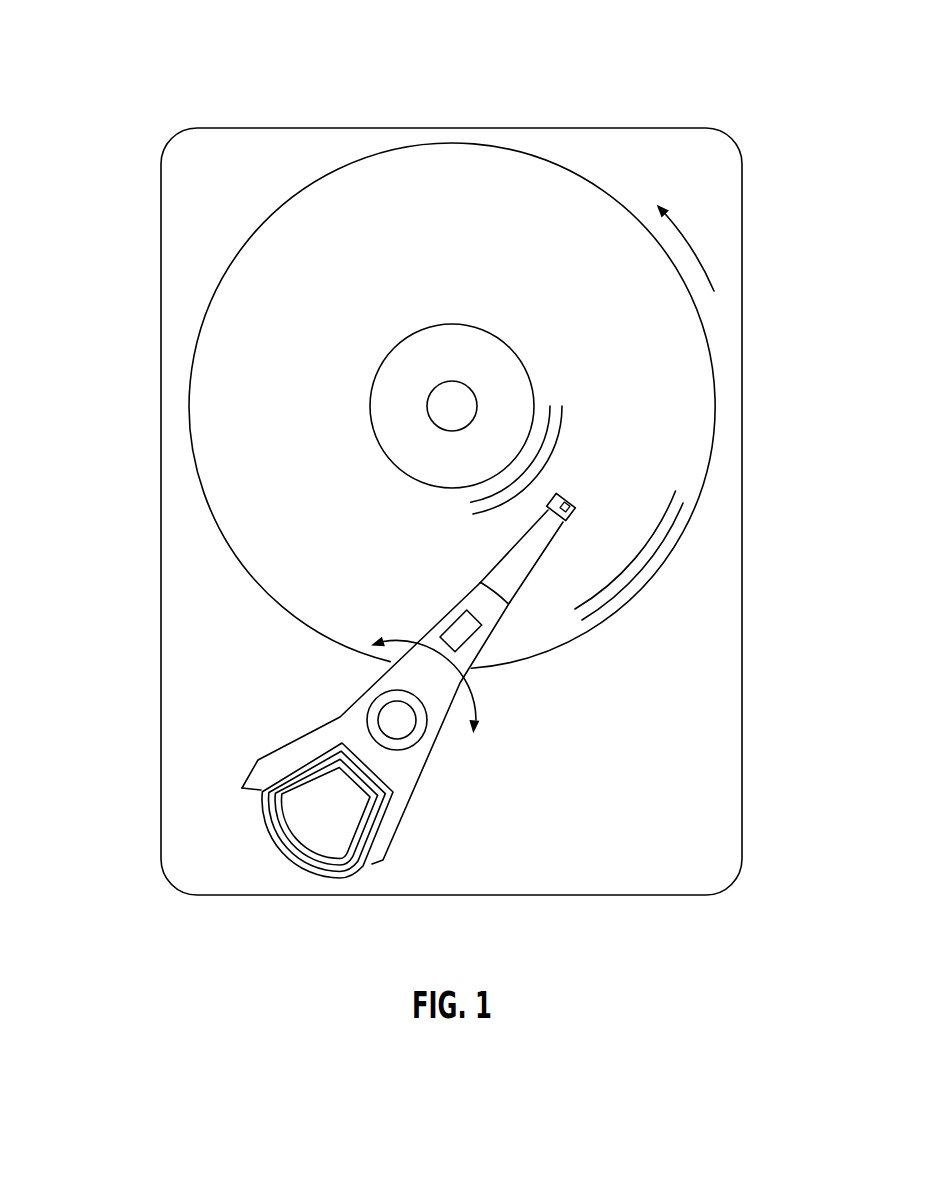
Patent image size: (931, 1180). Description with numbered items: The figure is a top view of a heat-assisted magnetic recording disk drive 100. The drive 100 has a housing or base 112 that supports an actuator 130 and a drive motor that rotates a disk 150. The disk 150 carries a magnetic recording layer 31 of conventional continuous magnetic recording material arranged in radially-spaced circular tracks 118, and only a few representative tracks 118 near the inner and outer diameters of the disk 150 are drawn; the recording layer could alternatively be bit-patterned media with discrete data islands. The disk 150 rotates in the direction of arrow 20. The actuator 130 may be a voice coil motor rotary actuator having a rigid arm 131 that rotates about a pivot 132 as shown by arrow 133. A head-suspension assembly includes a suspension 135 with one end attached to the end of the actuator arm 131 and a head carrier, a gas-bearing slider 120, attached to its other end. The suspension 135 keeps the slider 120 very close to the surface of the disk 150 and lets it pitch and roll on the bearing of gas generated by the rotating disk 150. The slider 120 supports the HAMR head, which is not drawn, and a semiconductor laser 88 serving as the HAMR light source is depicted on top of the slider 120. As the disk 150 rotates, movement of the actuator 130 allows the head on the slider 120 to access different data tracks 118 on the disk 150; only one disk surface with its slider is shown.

The HAMR disk drive 100 is at (152, 38).
The housing or base 112 is at (672, 127).
The disk 150 is at (313, 180).
The magnetic recording layer 31 is at (693, 371).
The arrow 20 is at (682, 233).
The tracks 118 is at (540, 399).
The suspension 135 is at (495, 573).
The semiconductor laser 88 is at (570, 504).
The gas-bearing slider 120 is at (570, 517).
The rigid arm 131 is at (438, 623).
The arrow 133 is at (476, 703).
The pivot 132 is at (388, 716).
The actuator 130 is at (246, 776).